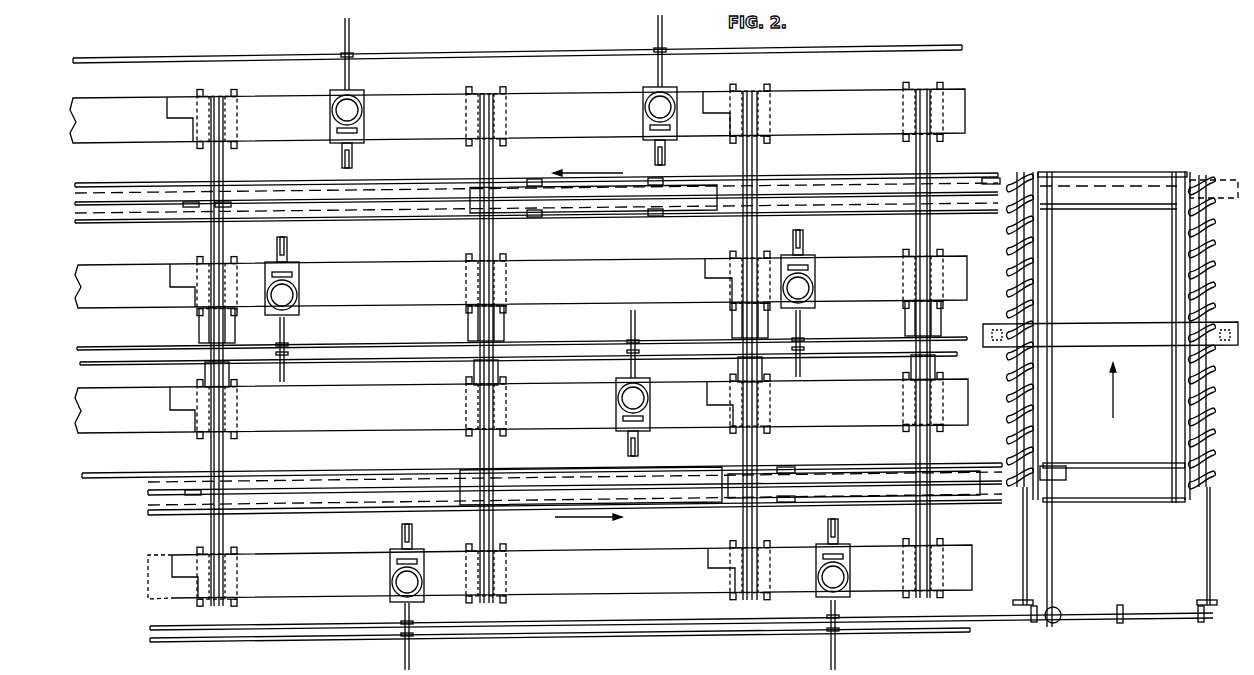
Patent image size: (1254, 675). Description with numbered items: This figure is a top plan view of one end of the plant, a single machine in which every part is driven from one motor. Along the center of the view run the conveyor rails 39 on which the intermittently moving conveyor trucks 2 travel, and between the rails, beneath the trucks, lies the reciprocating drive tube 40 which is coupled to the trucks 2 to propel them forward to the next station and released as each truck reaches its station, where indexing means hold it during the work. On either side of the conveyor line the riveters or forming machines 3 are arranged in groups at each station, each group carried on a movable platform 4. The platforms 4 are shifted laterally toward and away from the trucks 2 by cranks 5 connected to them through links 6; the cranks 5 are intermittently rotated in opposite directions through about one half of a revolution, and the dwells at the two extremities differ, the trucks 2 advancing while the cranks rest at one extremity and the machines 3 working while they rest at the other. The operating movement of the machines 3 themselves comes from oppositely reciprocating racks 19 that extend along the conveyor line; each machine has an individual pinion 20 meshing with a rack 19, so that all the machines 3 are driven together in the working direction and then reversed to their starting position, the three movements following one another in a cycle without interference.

The conveyor trucks 2 is at (612, 205).
The riveters or forming machines 3 is at (360, 100).
The movable platforms 4 is at (967, 106).
The cranks 5 is at (492, 290).
The links 6 is at (209, 165).
The racks 19 is at (552, 52).
The pinions 20 is at (349, 53).
The conveyor rails 39 is at (138, 222).
The reciprocating drive tube 40 is at (173, 207).